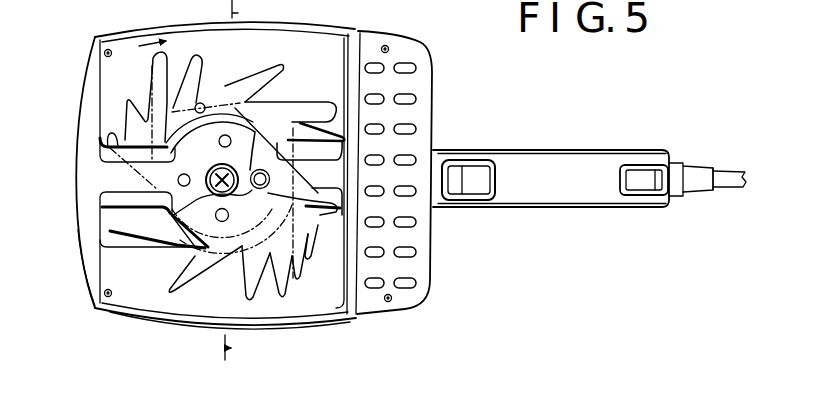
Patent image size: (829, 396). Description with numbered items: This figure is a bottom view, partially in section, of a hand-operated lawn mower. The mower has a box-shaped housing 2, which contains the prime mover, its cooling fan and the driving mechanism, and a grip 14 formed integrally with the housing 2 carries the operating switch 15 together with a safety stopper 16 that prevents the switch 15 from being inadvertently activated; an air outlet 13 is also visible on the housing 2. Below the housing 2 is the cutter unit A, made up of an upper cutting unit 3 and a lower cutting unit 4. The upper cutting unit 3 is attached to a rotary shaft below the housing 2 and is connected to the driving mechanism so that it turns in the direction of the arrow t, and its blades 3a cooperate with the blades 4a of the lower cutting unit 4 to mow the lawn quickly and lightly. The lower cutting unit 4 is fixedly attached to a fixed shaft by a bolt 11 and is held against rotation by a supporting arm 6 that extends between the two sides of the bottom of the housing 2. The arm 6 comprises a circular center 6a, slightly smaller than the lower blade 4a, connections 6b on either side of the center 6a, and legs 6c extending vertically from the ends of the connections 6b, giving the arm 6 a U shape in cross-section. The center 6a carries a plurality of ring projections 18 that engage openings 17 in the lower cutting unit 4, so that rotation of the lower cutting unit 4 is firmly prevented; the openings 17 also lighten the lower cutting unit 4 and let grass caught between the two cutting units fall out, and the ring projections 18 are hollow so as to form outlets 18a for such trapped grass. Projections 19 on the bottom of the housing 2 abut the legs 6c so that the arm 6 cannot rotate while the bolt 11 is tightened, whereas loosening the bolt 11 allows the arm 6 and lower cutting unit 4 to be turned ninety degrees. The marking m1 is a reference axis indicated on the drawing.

The housing 2 is at (296, 24).
The upper cutting unit 3 is at (204, 103).
The blade 3a is at (170, 58).
The lower cutting unit 4 is at (247, 258).
The blade 4a is at (205, 59).
The supporting arm 6 is at (106, 179).
The circular center 6a is at (173, 219).
The connections 6b is at (134, 209).
The legs 6c is at (87, 279).
The bolt 11 is at (213, 190).
The air outlet 13 is at (407, 262).
The grip 14 is at (535, 160).
The operating switch 15 is at (467, 172).
The safety stopper 16 is at (642, 177).
The openings 17 is at (220, 225).
The ring projections 18 is at (255, 190).
The outlets 18a is at (178, 181).
The projections 19 is at (139, 322).
The cutter unit A is at (272, 95).
The direction of rotation t is at (138, 45).
The reference axis m1 is at (244, 181).